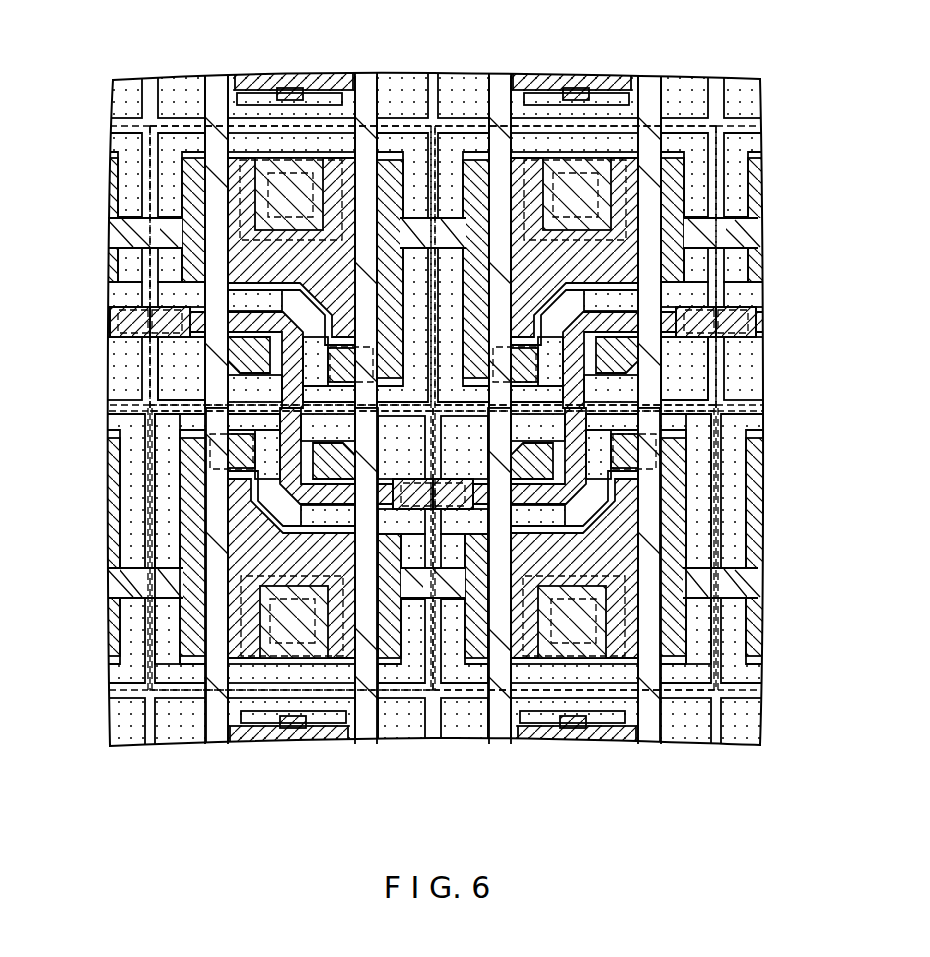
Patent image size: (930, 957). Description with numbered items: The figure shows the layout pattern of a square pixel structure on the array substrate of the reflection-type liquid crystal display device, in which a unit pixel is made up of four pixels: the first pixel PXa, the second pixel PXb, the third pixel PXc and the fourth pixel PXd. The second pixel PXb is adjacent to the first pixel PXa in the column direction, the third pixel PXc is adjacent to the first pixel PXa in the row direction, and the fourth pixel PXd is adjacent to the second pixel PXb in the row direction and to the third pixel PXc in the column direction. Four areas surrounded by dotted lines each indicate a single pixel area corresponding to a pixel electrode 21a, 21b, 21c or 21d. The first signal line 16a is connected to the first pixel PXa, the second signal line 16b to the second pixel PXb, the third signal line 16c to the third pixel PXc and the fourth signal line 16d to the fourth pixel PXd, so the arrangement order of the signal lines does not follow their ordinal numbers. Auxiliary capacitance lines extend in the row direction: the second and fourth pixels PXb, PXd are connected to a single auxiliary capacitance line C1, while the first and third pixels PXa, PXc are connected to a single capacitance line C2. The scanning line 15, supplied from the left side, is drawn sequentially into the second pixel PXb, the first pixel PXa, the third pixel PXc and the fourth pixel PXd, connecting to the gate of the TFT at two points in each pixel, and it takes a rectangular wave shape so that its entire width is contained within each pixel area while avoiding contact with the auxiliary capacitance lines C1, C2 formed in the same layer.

The first signal line 16a is at (221, 77).
The second signal line 16b is at (366, 77).
The third signal line 16c is at (650, 77).
The fourth signal line 16d is at (500, 77).
The scanning line 15 is at (112, 322).
The pixel electrode 21a is at (165, 456).
The pixel electrode 21b is at (175, 373).
The pixel electrode 21c is at (701, 456).
The pixel electrode 21d is at (691, 373).
The auxiliary capacitance line C1 is at (130, 233).
The auxiliary capacitance line C2 is at (140, 589).
The first pixel PXa is at (150, 641).
The second pixel PXb is at (150, 133).
The third pixel PXc is at (716, 641).
The fourth pixel PXd is at (716, 133).